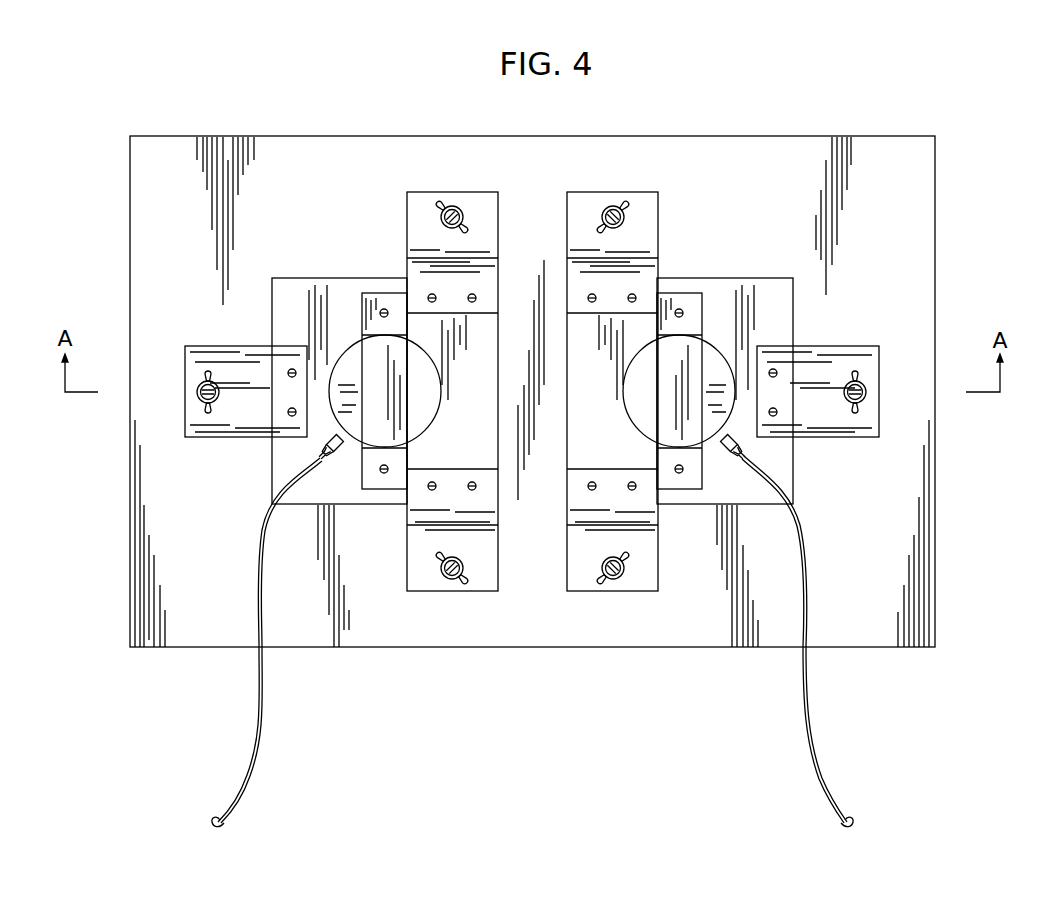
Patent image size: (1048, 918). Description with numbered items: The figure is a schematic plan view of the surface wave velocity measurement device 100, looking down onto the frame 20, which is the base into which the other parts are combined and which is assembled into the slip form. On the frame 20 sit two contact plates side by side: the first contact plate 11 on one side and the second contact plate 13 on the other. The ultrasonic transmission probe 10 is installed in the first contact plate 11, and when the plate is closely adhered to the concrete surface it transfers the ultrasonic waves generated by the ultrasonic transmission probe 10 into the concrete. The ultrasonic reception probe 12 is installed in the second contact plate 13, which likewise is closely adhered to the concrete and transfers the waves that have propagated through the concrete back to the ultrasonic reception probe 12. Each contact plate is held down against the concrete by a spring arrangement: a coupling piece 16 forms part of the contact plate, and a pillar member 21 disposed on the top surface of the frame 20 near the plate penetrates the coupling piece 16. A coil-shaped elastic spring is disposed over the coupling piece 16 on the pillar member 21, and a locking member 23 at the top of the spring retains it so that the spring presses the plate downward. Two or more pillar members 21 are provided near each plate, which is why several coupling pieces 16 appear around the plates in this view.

The surface wave velocity measurement device 100 is at (895, 660).
The frame 20 is at (912, 191).
The ultrasonic transmission probe 10 is at (347, 368).
The first contact plate 11 is at (293, 307).
The ultrasonic reception probe 12 is at (712, 357).
The second contact plate 13 is at (773, 323).
The coupling piece 16 is at (488, 205).
The pillar member 21 is at (461, 582).
The locking member 23 is at (440, 584).